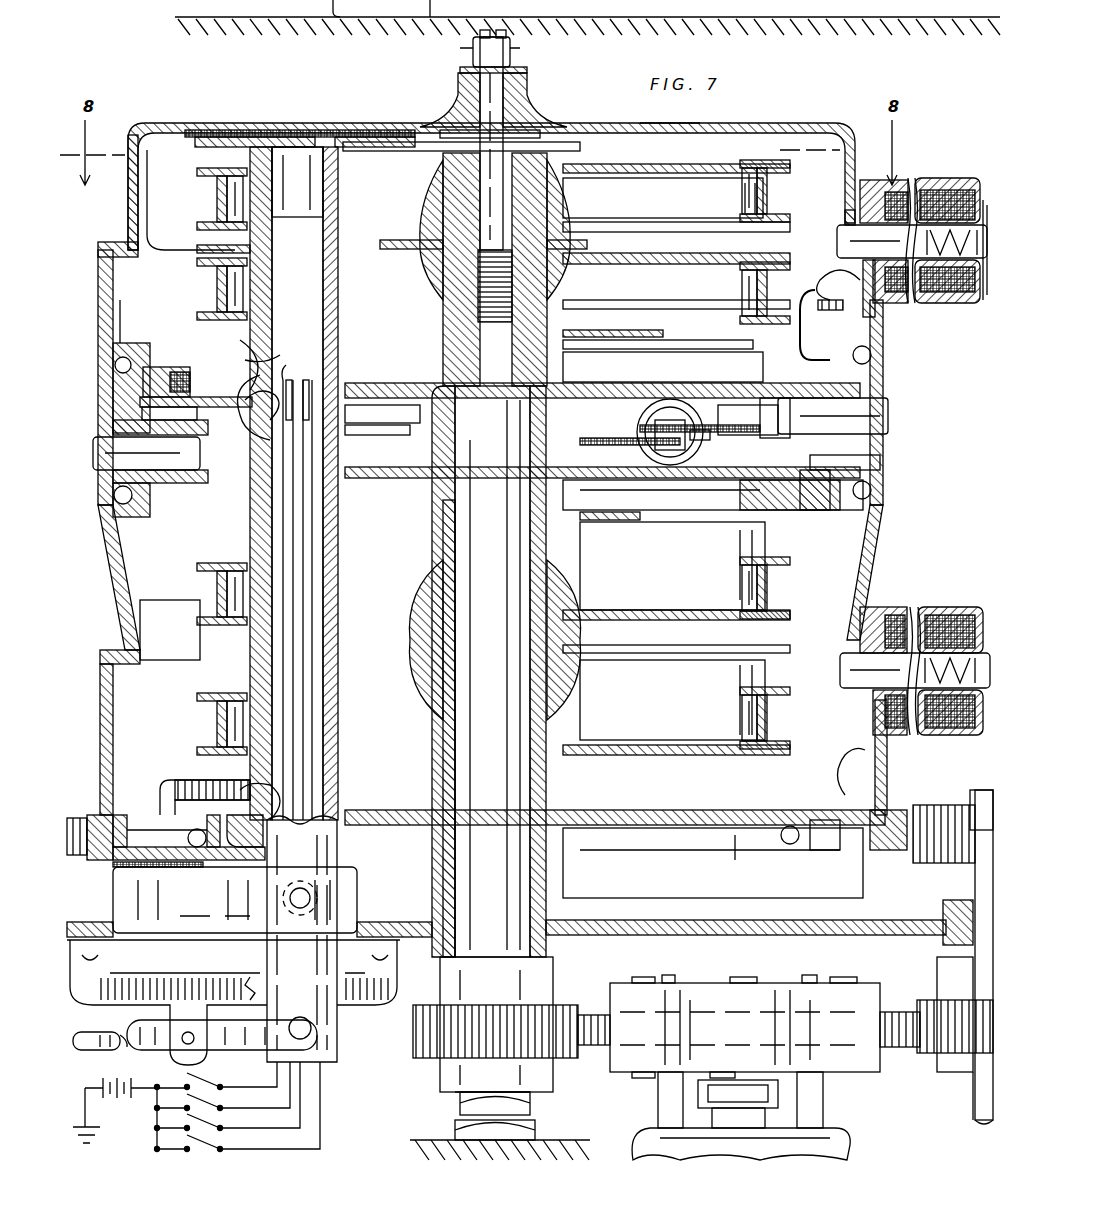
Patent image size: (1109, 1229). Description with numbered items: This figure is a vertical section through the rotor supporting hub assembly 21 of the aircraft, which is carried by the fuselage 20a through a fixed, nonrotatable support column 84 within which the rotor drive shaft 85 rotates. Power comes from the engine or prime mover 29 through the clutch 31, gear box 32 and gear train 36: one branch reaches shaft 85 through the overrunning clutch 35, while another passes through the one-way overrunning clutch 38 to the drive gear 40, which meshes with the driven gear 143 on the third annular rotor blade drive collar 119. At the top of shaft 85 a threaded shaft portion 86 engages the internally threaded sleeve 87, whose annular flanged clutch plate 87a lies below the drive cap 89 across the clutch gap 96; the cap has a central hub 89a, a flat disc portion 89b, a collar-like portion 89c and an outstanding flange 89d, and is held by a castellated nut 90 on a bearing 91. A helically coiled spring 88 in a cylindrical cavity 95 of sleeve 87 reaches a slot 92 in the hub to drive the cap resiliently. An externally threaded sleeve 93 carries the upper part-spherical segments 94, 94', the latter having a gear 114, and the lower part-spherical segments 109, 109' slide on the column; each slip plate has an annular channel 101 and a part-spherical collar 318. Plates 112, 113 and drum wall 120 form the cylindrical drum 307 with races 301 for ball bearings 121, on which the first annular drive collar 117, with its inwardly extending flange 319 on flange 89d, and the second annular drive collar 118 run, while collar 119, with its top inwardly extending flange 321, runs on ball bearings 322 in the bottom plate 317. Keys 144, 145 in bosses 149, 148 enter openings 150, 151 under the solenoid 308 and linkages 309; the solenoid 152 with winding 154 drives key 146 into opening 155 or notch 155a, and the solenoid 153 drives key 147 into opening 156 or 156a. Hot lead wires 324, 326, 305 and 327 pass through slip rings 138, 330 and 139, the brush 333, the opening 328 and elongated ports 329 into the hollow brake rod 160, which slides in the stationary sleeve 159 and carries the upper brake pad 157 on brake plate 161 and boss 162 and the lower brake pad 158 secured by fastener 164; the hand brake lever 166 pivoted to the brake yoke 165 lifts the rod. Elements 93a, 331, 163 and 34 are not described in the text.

The drive cap 89 is at (180, 122).
The central hub 89a is at (470, 57).
The flat disc portion 89b is at (645, 122).
The cylindrical collar-like portion 89c is at (191, 200).
The outstanding flange 89d is at (130, 258).
The castellated nut 90 is at (520, 47).
The bearing 91 is at (527, 85).
The slot 92 is at (540, 105).
The cylindrical cavity 95 is at (470, 130).
The rotor supporting hub assembly 21 is at (354, 109).
The upper brake pad 157 is at (268, 130).
The upper brake plate 161 is at (250, 145).
The hollow brake rod 160 is at (290, 158).
The boss 162 is at (290, 145).
The stationary brake rod supporting sleeve 159 is at (340, 543).
The hot lead wire 324 is at (525, 415).
The hot lead wire 305 is at (305, 660).
The hot lead wire 326 is at (248, 375).
The hot lead wire 327 is at (245, 773).
The elongated ports 329 is at (295, 378).
The opening 328 is at (245, 500).
The support column 84 is at (550, 805).
The rotor drive shaft 85 is at (515, 887).
The helically coiled spring 88 is at (475, 205).
The internally threaded sleeve 87 is at (540, 242).
The upper part-spherical segment 94 is at (540, 230).
The upper part-spherical segment 94' is at (395, 304).
The threaded shaft portion 86 is at (515, 292).
The externally threaded sleeve 93 is at (440, 244).
The clutch gap 96 is at (540, 150).
The annular flanged clutch plate 87a is at (575, 165).
The part-spherical collar 318 is at (565, 186).
The block 93a is at (365, 428).
The gear 114 is at (620, 330).
The upper plate 113 is at (660, 340).
The stationary slip ring 138 is at (700, 352).
The solenoid 308 is at (640, 430).
The linkages 309 is at (690, 447).
The key supporting boss 149 is at (820, 440).
The key 144 is at (880, 412).
The lower plate 112 is at (745, 482).
The stationary slip ring 330 is at (790, 500).
The bottom plate 317 is at (700, 810).
The ball bearings 322 is at (780, 850).
The rotatable slip ring 139 is at (800, 820).
The fuselage 20a is at (675, 920).
The annular channel 101 is at (222, 222).
The opening or notch 155a is at (138, 244).
The first annular rotor blade drive collar 117 is at (98, 320).
The inwardly extending flange 319 is at (110, 250).
The second annular rotor blade drive collar 118 is at (120, 565).
The top inwardly extending flange 321 is at (110, 652).
The third annular rotor blade drive collar 119 is at (100, 745).
The opening 156a is at (140, 662).
The brush 333 is at (175, 778).
The races 301 is at (115, 365).
The cylindrical drum 307 is at (913, 474).
The key 145 is at (95, 452).
The opening 151 is at (110, 478).
The ball bearings 121 is at (110, 505).
The key supporting boss 148 is at (215, 370).
The lower part-spherical segment 109 is at (401, 640).
The lower part-spherical segment 109' is at (475, 673).
The opening 150 is at (885, 390).
The outer cylindrical drum wall 120 is at (885, 448).
The opening 155 is at (850, 220).
The solenoid 152 is at (950, 180).
The key 146 is at (838, 242).
The wire 331 is at (822, 300).
The solenoid winding 154 is at (950, 305).
The solenoid 153 is at (970, 607).
The opening 156 is at (850, 648).
The key 147 is at (848, 668).
The driven gear 143 is at (895, 812).
The drive gear 40 is at (935, 863).
The lower brake pad 158 is at (160, 887).
The fastener 164 is at (315, 892).
The bracket 163 is at (113, 905).
The brake yoke 165 is at (125, 1000).
The hand brake lever 166 is at (135, 1025).
The circuit 34 is at (425, 1050).
The overrunning clutch 35 is at (530, 980).
The gear box 32 is at (708, 990).
The clutch 31 is at (700, 1095).
The engine or prime mover 29 is at (830, 1140).
The one-way drive or overrunning clutch 38 is at (937, 972).
The gear train 36 is at (940, 1040).